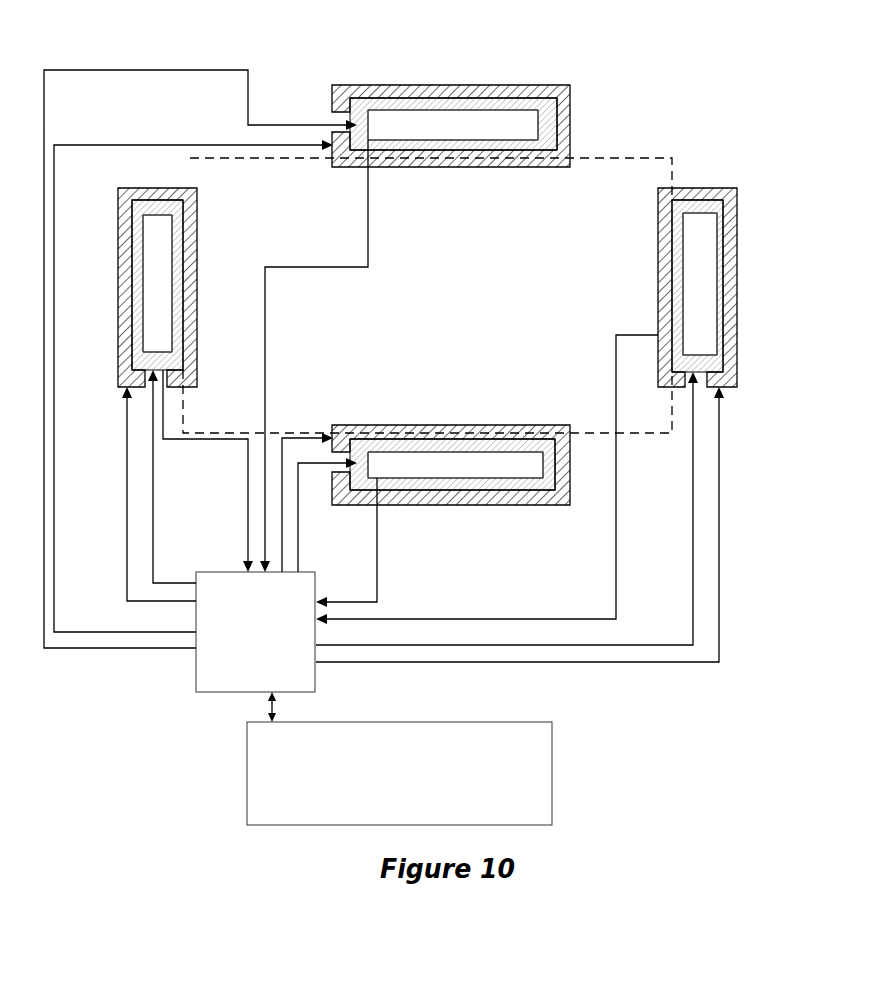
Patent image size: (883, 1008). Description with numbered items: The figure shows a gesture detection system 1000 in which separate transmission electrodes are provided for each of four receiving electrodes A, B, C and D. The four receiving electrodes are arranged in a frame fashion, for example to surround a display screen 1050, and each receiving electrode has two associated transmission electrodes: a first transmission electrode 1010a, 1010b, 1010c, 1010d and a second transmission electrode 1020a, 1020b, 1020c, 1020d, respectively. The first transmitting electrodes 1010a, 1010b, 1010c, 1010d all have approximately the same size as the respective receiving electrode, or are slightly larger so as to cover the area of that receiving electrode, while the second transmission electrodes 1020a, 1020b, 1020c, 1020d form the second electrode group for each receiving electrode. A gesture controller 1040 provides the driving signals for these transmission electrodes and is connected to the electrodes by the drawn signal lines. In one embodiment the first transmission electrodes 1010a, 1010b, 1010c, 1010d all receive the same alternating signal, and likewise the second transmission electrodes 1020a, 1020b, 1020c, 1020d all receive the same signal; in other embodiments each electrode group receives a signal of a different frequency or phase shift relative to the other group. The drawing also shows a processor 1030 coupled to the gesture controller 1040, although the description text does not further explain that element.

The system 1000 is at (665, 89).
The first transmission electrode 1010a is at (330, 83).
The first transmission electrode 1010b is at (455, 425).
The first transmission electrode 1010c is at (183, 190).
The first transmission electrode 1010d is at (738, 327).
The second transmission electrode 1020a is at (438, 149).
The second transmission electrode 1020b is at (573, 420).
The second transmission electrode 1020c is at (198, 250).
The second transmission electrode 1020d is at (738, 380).
The processor 1030 is at (253, 812).
The gesture controller 1040 is at (207, 580).
The display screen 1050 is at (672, 182).